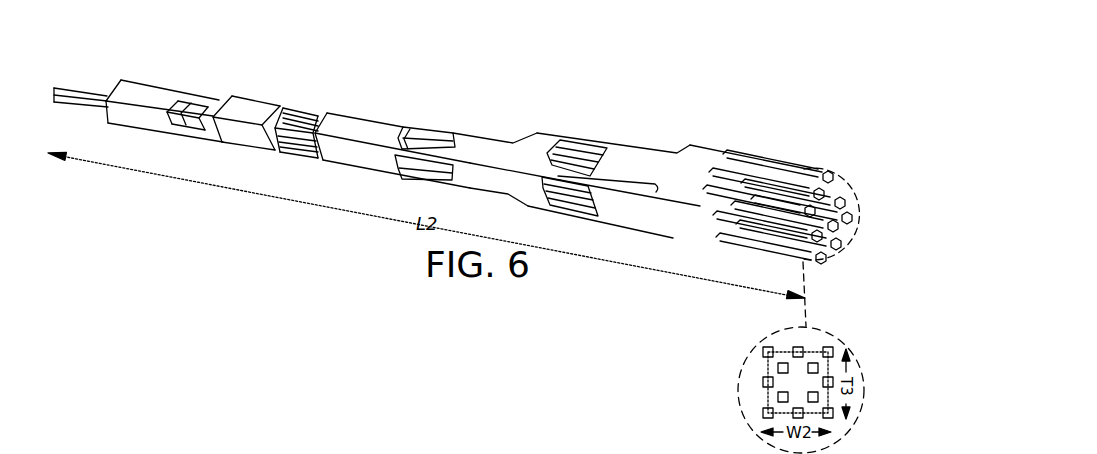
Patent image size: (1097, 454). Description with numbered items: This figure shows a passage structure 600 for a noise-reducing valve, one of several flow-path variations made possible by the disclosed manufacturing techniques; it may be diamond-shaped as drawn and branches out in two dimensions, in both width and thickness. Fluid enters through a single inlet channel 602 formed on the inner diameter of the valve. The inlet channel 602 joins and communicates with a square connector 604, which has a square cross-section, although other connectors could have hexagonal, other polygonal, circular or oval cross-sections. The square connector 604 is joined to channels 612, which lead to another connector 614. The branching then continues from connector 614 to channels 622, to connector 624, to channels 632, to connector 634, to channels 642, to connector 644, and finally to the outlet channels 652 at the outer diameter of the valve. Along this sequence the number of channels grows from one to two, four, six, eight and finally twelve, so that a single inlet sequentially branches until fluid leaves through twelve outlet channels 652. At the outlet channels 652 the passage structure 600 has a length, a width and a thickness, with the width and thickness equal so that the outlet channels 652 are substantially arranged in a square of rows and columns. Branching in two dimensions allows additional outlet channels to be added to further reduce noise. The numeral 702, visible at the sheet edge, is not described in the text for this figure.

The passage structure 600 is at (498, 108).
The inlet channel 602 is at (81, 92).
The square connector 604 is at (123, 117).
The channels 612 is at (200, 98).
The connector 614 is at (240, 137).
The channels 622 is at (307, 113).
The connector 624 is at (350, 155).
The channels 632 is at (433, 130).
The connector 634 is at (468, 178).
The channels 642 is at (593, 140).
The connector 644 is at (617, 212).
The outlet channels 652 is at (787, 160).
The element of adjacent figure 702 is at (102, 446).